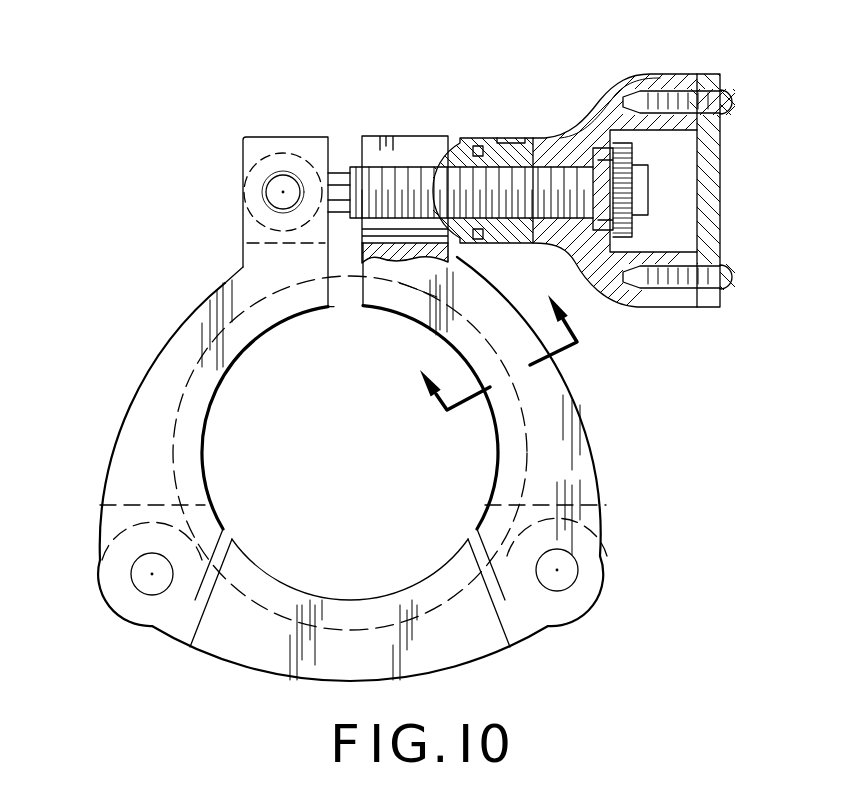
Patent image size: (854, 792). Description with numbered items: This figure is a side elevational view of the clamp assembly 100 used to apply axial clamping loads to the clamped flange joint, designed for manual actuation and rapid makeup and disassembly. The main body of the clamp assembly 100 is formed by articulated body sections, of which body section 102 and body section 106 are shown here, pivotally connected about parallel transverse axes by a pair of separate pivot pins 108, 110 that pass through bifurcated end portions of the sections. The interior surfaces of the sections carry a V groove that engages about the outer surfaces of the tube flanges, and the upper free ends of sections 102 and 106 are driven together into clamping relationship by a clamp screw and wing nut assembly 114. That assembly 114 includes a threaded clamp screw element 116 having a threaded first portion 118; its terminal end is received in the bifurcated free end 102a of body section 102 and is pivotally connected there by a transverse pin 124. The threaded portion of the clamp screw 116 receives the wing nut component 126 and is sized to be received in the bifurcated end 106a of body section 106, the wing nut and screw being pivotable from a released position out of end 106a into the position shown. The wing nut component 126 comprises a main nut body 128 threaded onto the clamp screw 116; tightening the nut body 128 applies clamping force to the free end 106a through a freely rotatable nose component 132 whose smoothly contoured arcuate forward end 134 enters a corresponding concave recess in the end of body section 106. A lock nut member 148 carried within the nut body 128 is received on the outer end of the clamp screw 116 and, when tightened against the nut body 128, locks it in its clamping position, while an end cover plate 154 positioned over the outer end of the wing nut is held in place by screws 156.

The clamp assembly 100 is at (562, 94).
The body section 102 is at (222, 282).
The bifurcated free end 102a is at (243, 152).
The body section 106 is at (584, 430).
The bifurcated end 106a is at (378, 135).
The pivot pin 108 is at (140, 560).
The pivot pin 110 is at (580, 573).
The clamp screw and wing nut assembly 114 is at (400, 108).
The threaded clamp screw element 116 is at (555, 214).
The threaded first portion 118 is at (505, 172).
The transverse pin 124 is at (283, 172).
The wing nut component 126 is at (731, 137).
The main nut body 128 is at (706, 308).
The nose component 132 is at (391, 259).
The arcuate forward end 134 is at (437, 259).
The lock nut member 148 is at (633, 178).
The end cover plate 154 is at (720, 196).
The screws 156 is at (733, 92).